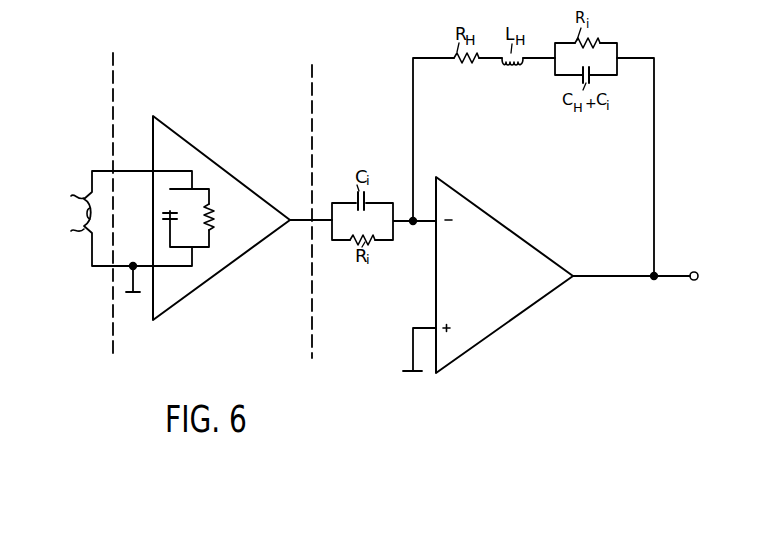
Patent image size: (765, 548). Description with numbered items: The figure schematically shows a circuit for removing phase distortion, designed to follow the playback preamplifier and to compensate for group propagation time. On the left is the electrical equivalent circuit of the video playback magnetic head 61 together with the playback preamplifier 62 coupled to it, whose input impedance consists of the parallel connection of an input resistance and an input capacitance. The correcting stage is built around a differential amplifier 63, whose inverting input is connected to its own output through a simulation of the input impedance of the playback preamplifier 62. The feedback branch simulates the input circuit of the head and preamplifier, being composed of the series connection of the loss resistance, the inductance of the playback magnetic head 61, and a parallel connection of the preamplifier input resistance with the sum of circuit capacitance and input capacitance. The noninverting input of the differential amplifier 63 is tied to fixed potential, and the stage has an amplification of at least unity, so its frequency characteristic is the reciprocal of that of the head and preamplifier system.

The video playback magnetic head 61 is at (83, 197).
The playback preamplifier 62 is at (232, 182).
The differential amplifier 63 is at (505, 310).